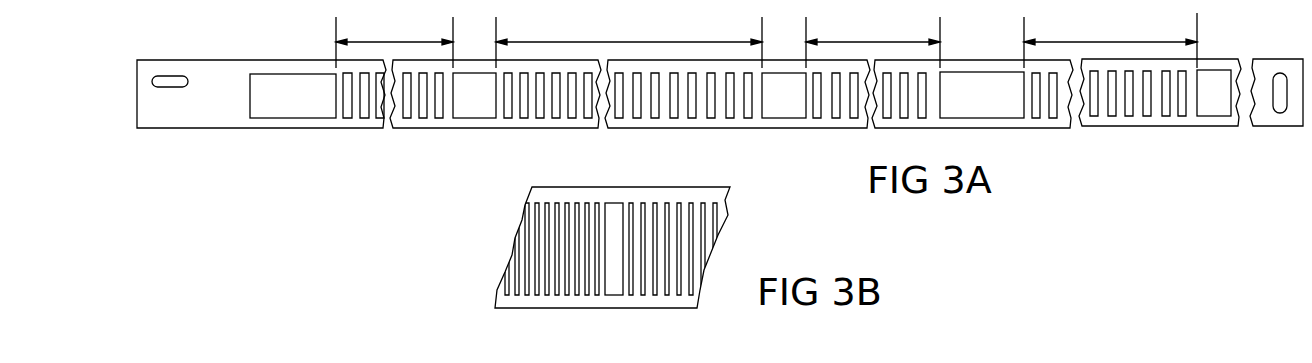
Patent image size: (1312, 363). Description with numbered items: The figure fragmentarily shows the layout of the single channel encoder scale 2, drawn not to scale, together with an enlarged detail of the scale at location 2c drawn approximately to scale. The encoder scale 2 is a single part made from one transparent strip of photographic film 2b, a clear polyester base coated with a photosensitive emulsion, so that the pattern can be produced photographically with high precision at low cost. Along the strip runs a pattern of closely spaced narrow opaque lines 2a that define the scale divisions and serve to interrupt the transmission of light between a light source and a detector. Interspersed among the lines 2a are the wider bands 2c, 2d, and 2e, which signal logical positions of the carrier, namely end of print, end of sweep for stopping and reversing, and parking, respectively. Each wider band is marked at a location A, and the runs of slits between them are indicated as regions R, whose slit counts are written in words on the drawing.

In FIG. 3A, the encoder scale 2 is at (348, 128).
In FIG. 3B, the encoder scale 2 is at (526, 195).
In FIG. 3A, the opaque lines 2a is at (555, 118).
In FIG. 3B, the opaque lines 2a is at (517, 250).
In FIG. 3A, the photographic film strip 2b is at (688, 121).
In FIG. 3A, the wider band 2c is at (475, 118).
In FIG. 3B, the wider band 2c is at (613, 272).
In FIG. 3A, the wider band 2d is at (294, 118).
In FIG. 3A, the wider band 2e is at (1210, 116).
In FIG. 3A, the aperture position A is at (288, 71).
In FIG. 3A, the slit region R is at (766, 34).